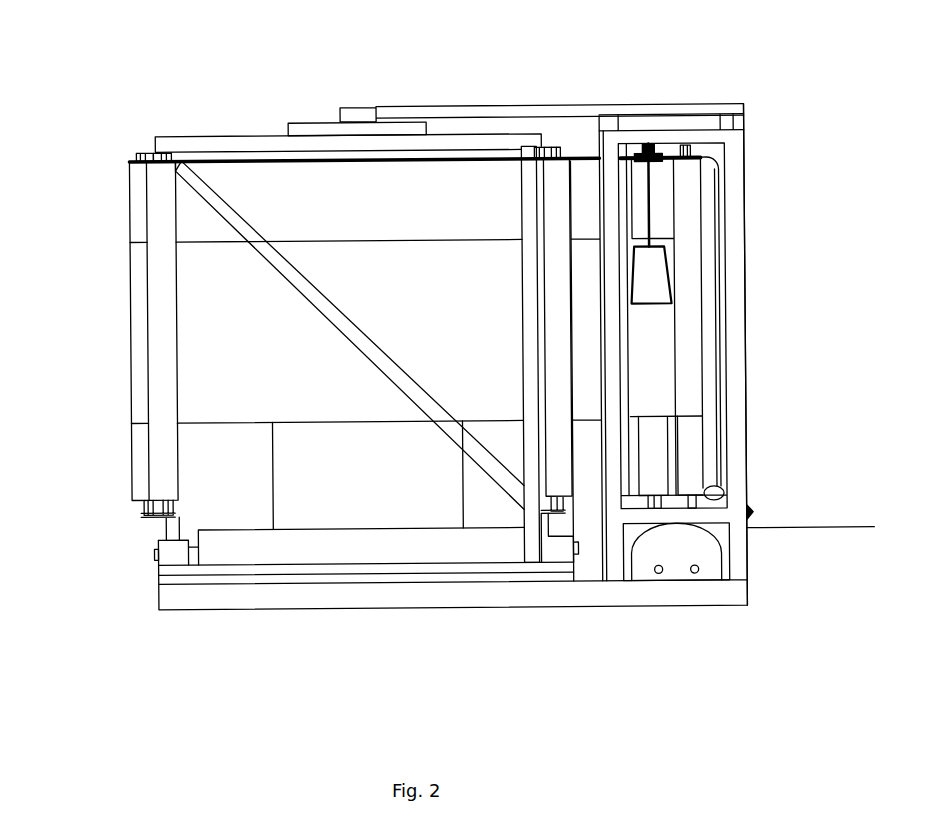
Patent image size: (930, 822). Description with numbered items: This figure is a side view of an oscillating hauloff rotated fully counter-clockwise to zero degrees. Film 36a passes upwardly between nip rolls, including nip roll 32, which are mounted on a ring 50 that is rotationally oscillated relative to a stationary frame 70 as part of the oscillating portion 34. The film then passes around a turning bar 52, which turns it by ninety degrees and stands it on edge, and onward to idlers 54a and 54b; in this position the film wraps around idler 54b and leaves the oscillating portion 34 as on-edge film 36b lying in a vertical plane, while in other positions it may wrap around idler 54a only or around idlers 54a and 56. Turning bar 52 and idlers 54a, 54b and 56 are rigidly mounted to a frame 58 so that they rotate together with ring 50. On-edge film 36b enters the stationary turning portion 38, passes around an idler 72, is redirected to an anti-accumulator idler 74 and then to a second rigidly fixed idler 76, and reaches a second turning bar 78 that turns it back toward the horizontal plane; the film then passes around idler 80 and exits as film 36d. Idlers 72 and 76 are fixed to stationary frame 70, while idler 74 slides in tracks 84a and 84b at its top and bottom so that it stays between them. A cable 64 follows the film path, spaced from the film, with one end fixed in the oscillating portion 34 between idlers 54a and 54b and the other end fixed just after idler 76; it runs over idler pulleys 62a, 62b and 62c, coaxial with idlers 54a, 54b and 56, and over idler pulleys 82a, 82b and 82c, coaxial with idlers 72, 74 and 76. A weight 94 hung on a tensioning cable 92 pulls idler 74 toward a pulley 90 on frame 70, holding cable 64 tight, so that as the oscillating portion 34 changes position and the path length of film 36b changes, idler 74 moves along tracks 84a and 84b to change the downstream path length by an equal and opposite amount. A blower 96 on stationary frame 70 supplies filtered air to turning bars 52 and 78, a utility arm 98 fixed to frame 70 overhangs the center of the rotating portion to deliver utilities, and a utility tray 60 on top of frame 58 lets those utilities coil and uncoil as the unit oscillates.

The nip roll 32 is at (352, 543).
The oscillating portion 34 is at (131, 477).
The film 36a is at (305, 395).
The on-edge film 36b is at (400, 282).
The film 36d is at (811, 530).
The stationary turning portion 38 is at (748, 361).
The ring 50 is at (242, 570).
The turning bar 52 is at (215, 202).
The idler 54a is at (167, 363).
The idler 54b is at (143, 443).
The idler 56 is at (558, 211).
The frame 58 is at (206, 144).
The utility tray 60 is at (307, 127).
The idler pulley 62a is at (172, 163).
The idler pulley 62b is at (132, 157).
The idler pulley 62c is at (561, 147).
The cable 64 is at (393, 160).
The stationary frame 70 is at (462, 598).
The idler 72 is at (638, 160).
The anti-accumulator idler 74 is at (655, 441).
The idler 76 is at (690, 443).
The turning bar 78 is at (716, 178).
The idler 80 is at (750, 516).
The idler pulley 82a is at (620, 203).
The idler pulley 82b is at (647, 148).
The idler pulley 82c is at (712, 176).
The track 84a is at (660, 152).
The track 84b is at (652, 512).
The pulley 90 is at (668, 156).
The tensioning cable 92 is at (650, 225).
The weight 94 is at (650, 278).
The blower 96 is at (675, 556).
The utility arm 98 is at (498, 112).